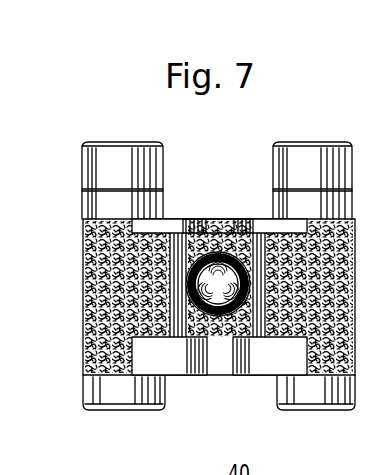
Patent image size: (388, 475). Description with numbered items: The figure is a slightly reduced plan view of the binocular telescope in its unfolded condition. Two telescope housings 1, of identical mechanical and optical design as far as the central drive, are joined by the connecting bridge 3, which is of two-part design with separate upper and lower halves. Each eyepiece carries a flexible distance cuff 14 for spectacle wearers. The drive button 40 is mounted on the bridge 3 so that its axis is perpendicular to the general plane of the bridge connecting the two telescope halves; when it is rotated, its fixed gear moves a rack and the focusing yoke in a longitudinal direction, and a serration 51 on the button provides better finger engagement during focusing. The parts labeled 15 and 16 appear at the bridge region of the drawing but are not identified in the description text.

The telescope housing 1 is at (357, 283).
The connecting bridge 3 is at (225, 330).
The flexible distance cuff 14 is at (352, 159).
The upper bridge plate 15 is at (182, 218).
The lower bridge plate 16 is at (172, 362).
The drive button 40 is at (228, 236).
The serration 51 is at (217, 276).